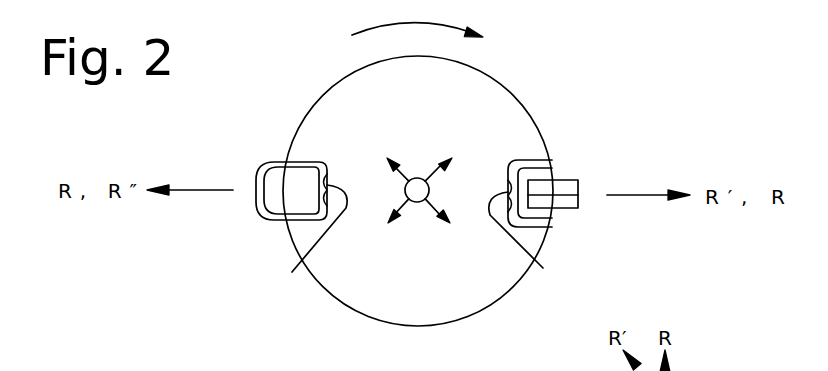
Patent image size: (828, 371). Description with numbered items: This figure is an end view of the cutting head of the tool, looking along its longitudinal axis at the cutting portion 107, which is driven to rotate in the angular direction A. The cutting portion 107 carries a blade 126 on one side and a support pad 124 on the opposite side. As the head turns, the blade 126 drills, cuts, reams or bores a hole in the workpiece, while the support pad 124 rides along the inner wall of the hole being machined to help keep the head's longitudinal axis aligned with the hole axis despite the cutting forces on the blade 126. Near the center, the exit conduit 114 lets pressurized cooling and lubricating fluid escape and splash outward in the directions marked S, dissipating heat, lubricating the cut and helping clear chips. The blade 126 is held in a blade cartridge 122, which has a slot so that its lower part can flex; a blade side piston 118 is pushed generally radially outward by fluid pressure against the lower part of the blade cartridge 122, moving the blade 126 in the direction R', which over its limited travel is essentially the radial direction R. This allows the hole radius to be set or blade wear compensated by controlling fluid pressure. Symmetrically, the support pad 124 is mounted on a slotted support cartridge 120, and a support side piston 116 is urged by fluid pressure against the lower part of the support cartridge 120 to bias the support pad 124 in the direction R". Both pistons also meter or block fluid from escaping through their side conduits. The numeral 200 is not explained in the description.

The cutting portion 107 is at (460, 322).
The exit conduit 114 is at (417, 178).
The support side piston 116 is at (295, 239).
The blade side piston 118 is at (537, 244).
The support cartridge 120 is at (298, 158).
The blade cartridge 122 is at (560, 170).
The support pad 124 is at (254, 168).
The blade 126 is at (579, 190).
The positioning apparatus 200 is at (309, 363).